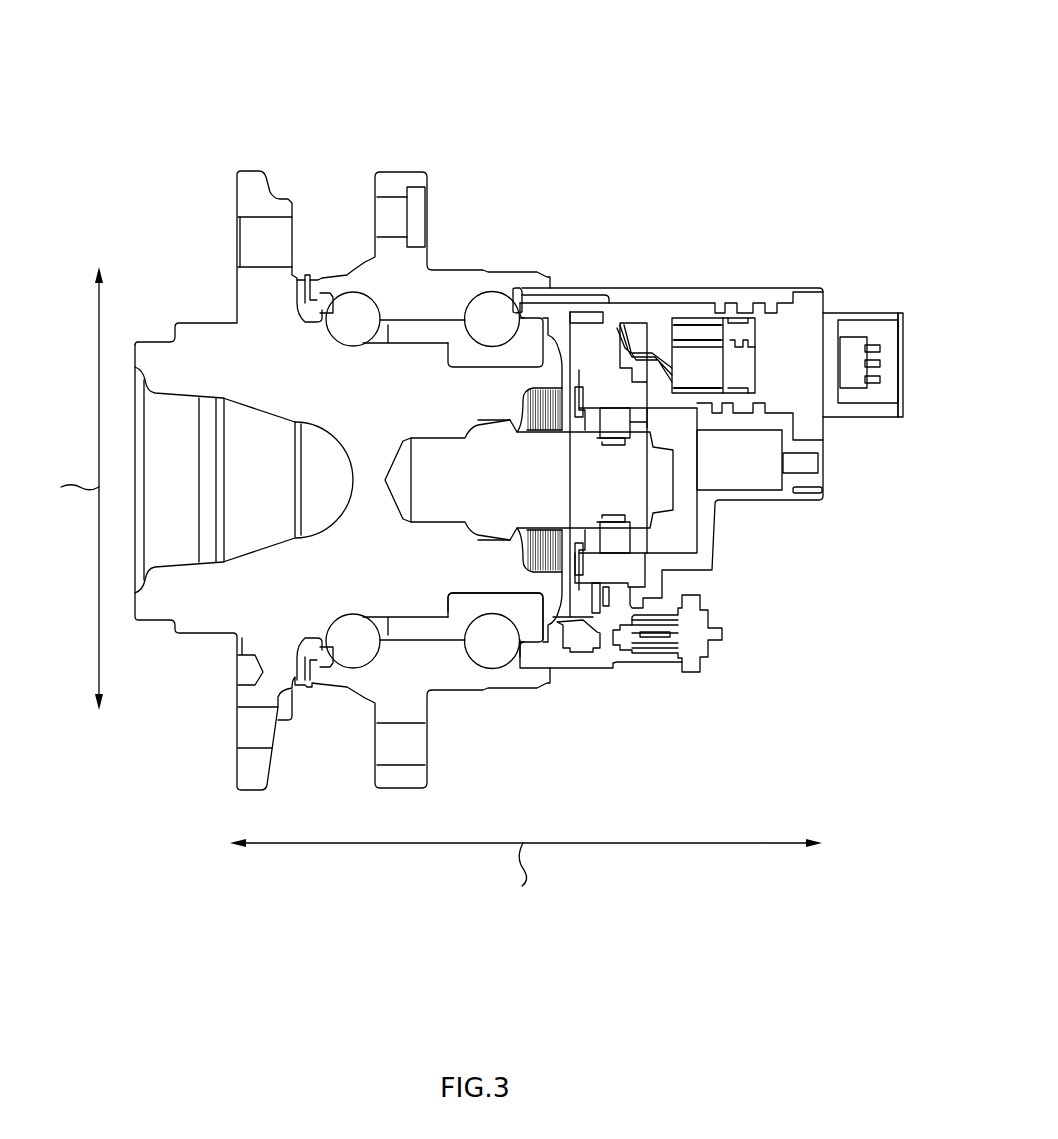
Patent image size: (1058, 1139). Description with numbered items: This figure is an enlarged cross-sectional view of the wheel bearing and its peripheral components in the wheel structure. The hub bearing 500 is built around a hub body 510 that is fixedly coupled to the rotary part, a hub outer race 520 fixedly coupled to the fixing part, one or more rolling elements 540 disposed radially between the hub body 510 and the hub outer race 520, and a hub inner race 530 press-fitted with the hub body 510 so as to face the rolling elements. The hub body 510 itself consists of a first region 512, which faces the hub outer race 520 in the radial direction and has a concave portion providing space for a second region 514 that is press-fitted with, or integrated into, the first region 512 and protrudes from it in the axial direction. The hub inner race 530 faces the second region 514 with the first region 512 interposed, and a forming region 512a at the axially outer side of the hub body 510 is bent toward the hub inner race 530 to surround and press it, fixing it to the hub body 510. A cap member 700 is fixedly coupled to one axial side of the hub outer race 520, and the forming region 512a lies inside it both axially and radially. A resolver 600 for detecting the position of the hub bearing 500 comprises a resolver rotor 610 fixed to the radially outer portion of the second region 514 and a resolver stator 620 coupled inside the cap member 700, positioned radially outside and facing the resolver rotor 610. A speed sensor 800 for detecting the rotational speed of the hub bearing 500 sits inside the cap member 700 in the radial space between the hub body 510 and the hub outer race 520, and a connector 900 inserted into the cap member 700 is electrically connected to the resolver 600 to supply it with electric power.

The hub bearing 500 is at (332, 176).
The hub body 510 is at (851, 12).
The first region 512 is at (260, 370).
The forming region 512a is at (551, 362).
The second region 514 is at (503, 480).
The hub outer race 520 is at (462, 680).
The hub inner race 530 is at (530, 628).
The rolling elements 540 is at (497, 657).
The resolver 600 is at (825, 540).
The resolver rotor 610 is at (620, 543).
The resolver stator 620 is at (617, 573).
The cap member 700 is at (666, 293).
The speed sensor 800 is at (583, 647).
The connector 900 is at (823, 352).